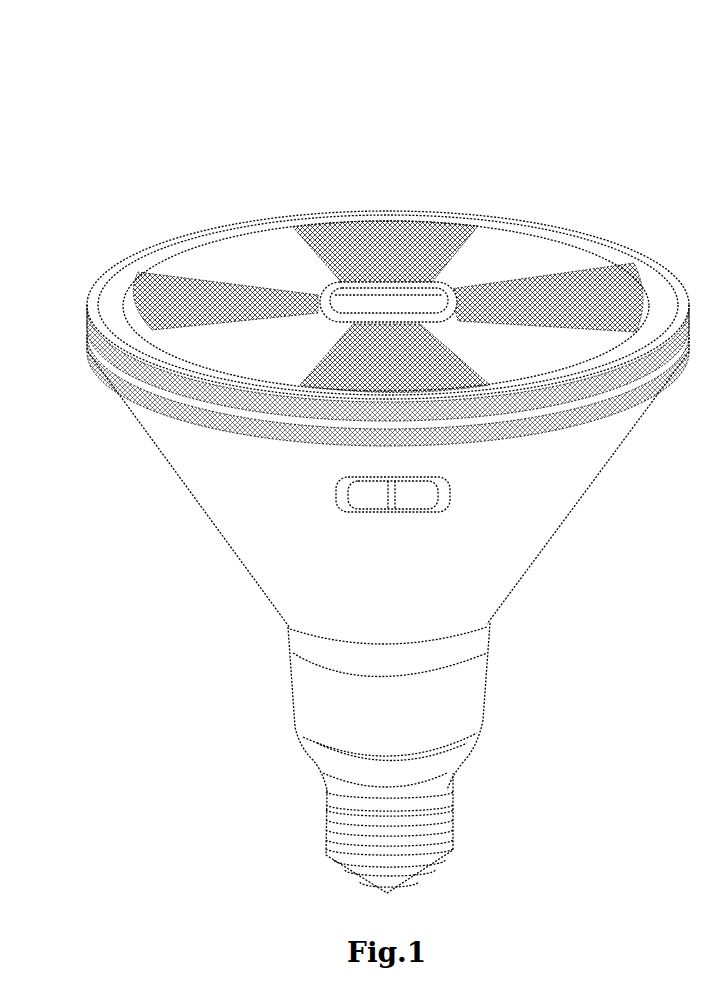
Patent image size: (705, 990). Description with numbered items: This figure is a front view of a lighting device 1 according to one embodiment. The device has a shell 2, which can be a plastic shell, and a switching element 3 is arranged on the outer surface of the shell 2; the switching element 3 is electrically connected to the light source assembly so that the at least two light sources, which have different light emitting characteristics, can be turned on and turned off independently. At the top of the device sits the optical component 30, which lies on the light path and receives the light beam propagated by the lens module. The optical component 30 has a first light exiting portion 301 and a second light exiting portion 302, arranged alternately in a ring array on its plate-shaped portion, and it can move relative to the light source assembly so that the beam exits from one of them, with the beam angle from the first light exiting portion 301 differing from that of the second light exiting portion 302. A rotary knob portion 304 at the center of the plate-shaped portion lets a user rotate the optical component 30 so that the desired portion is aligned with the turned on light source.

The lighting device 1 is at (96, 77).
The shell 2 is at (530, 488).
The switching element 3 is at (370, 490).
The optical component 30 is at (534, 221).
The first light exiting portion 301 is at (363, 237).
The second light exiting portion 302 is at (255, 265).
The rotary knob portion 304 is at (375, 307).